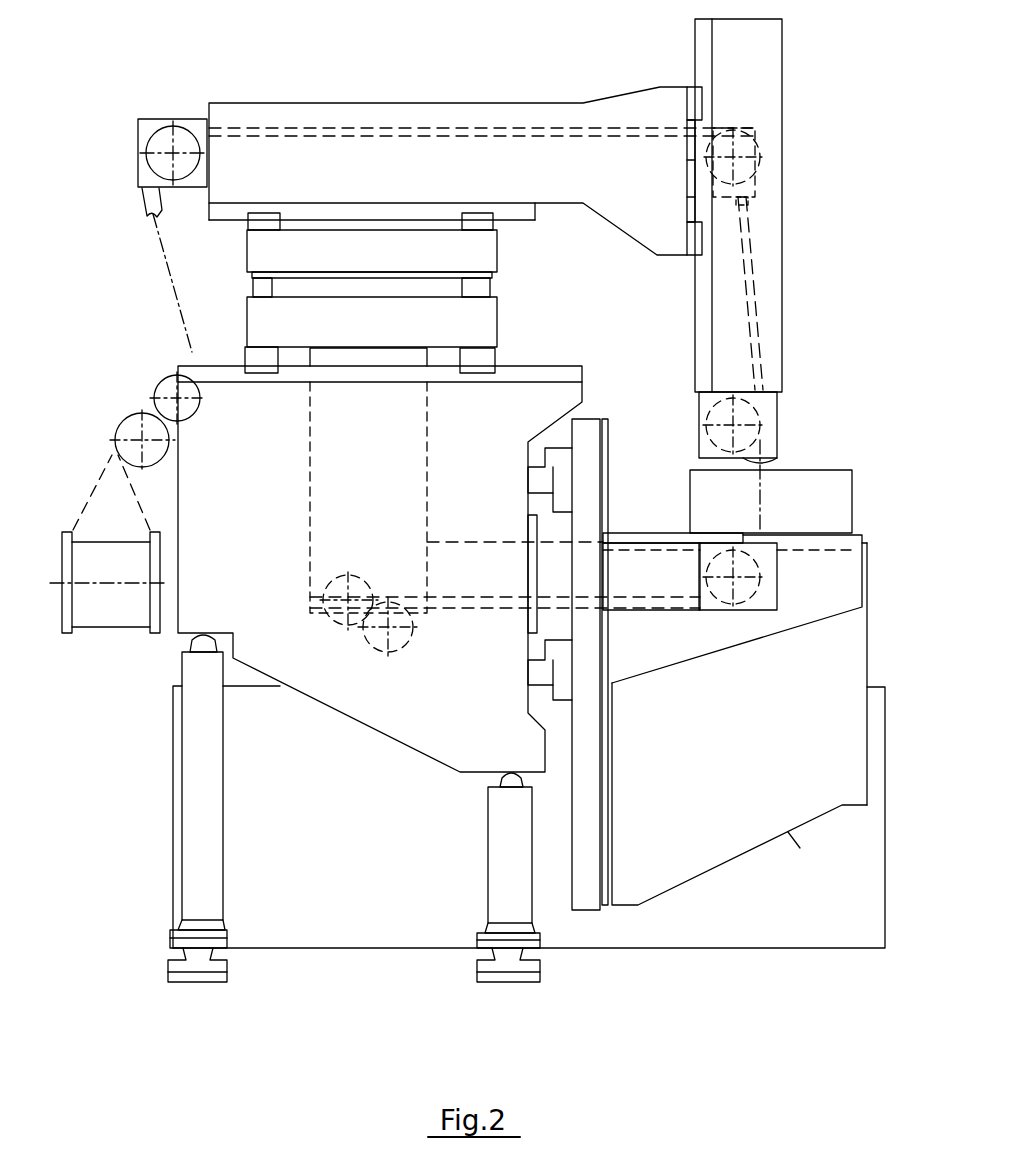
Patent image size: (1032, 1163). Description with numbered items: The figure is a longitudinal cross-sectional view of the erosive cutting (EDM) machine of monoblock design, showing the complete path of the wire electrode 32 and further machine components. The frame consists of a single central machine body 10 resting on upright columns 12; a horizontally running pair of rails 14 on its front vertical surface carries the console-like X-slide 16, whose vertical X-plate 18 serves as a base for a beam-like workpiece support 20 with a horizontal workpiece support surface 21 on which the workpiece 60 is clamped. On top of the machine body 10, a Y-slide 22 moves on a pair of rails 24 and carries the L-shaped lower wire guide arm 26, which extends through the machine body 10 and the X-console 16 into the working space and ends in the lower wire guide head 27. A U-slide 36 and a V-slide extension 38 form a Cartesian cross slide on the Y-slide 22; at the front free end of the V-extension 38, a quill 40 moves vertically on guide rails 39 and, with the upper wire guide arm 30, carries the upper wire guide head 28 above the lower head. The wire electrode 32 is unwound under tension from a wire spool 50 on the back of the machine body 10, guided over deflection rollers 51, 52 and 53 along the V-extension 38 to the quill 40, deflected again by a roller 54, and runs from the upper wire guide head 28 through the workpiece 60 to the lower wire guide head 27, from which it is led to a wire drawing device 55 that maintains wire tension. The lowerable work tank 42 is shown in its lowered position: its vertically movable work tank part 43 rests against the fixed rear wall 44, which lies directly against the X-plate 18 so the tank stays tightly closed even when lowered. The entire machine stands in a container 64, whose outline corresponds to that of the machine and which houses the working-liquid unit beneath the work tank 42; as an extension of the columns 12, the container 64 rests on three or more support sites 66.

The machine body 10 is at (240, 536).
The upright columns 12 is at (208, 857).
The pair of rails 14 is at (537, 480).
The console-like slide 16 is at (772, 720).
The vertical plate 18 is at (590, 432).
The workpiece support 20 is at (760, 635).
The workpiece support surface 21 is at (659, 530).
The Y-slide 22 is at (260, 320).
The pair of rails 24 is at (538, 375).
The lower wire guide arm 26 is at (448, 558).
The lower wire guide head 27 is at (764, 560).
The upper wire guide head 28 is at (767, 411).
The upper wire guide arm 30 is at (482, 137).
The wire electrode 32 is at (752, 297).
The U-slide 36 is at (262, 258).
The V-slide extension 38 is at (316, 125).
The guide rails 39 is at (702, 47).
The quill 40 is at (764, 76).
The work tank 42 is at (788, 832).
The work tank part 43 is at (724, 784).
The rear wall 44 is at (608, 452).
The wire spool 50 is at (103, 617).
The deflection roller 51 is at (130, 436).
The deflection roller 52 is at (170, 390).
The deflection roller 53 is at (162, 140).
The roller 54 is at (740, 147).
The wire drawing device 55 is at (378, 642).
The workpiece 60 is at (838, 499).
The container 64 is at (780, 950).
The support sites 66 is at (228, 976).